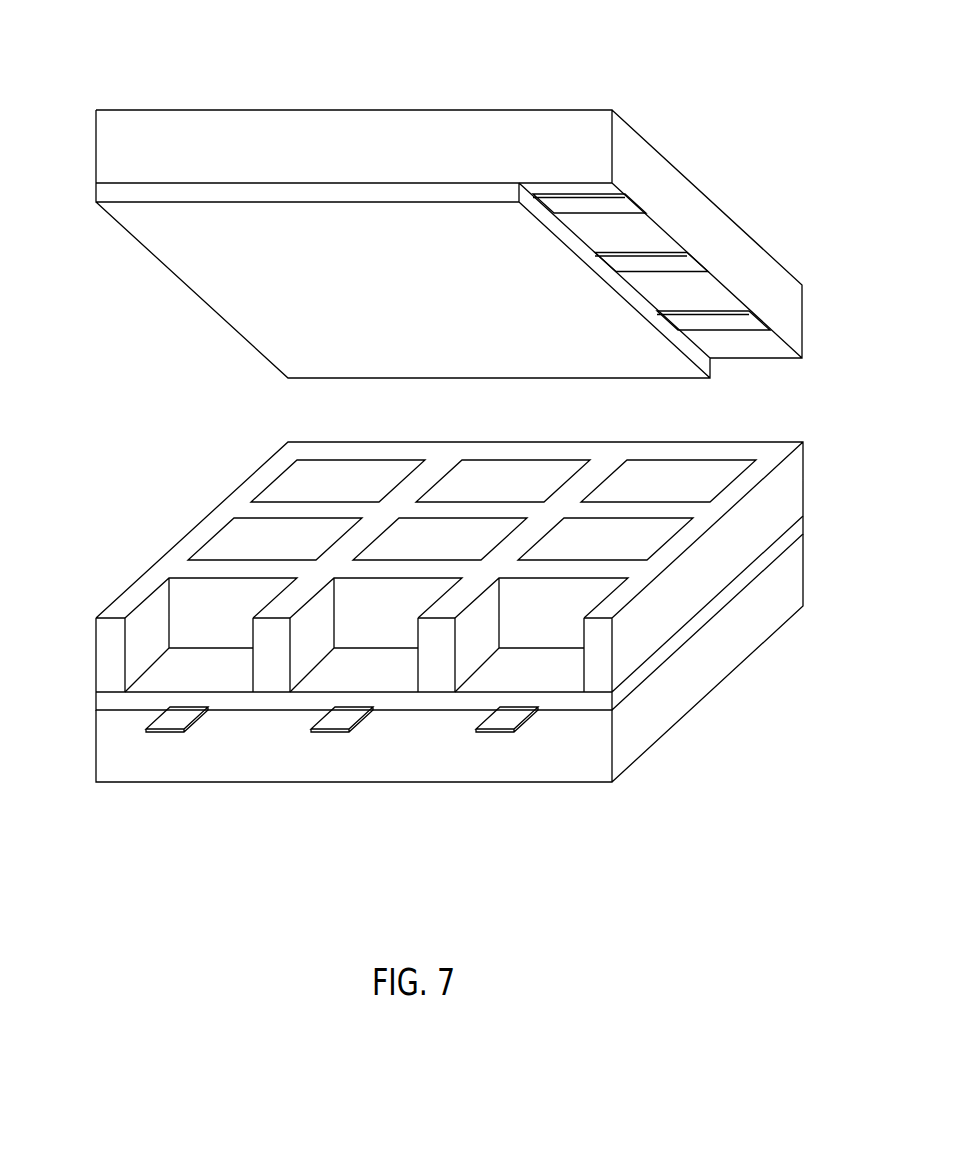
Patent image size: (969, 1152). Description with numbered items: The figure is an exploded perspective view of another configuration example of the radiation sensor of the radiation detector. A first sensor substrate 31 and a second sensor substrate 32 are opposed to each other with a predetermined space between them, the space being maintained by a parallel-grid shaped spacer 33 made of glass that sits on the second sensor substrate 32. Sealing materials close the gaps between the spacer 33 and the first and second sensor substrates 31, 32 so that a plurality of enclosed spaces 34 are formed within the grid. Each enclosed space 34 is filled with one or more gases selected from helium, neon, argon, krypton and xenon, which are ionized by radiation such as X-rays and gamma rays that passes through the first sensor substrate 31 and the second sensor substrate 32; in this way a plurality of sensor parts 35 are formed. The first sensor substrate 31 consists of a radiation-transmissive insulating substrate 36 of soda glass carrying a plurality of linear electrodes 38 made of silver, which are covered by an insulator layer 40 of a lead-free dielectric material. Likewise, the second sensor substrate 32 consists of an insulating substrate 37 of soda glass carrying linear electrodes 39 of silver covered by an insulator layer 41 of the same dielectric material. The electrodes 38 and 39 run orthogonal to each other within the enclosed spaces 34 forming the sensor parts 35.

The first sensor substrate 31 is at (533, 76).
The insulating substrate 36 is at (122, 147).
The insulator layer 40 is at (122, 192).
The linear electrodes 38 is at (620, 208).
The second sensor substrate 32 is at (607, 812).
The spacer 33 is at (788, 492).
The insulator layer 41 is at (793, 535).
The enclosed spaces 34 is at (252, 543).
The sensor parts 35 is at (543, 540).
The insulating substrate 37 is at (122, 747).
The linear electrodes 39 is at (502, 723).